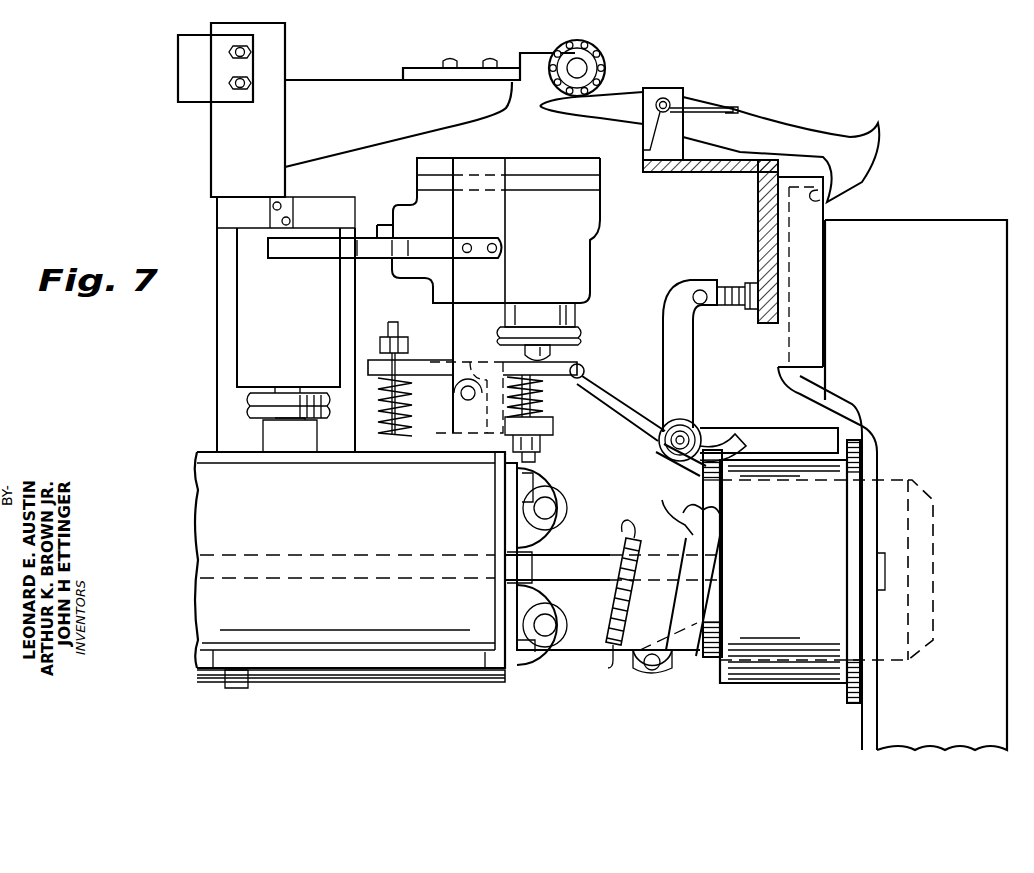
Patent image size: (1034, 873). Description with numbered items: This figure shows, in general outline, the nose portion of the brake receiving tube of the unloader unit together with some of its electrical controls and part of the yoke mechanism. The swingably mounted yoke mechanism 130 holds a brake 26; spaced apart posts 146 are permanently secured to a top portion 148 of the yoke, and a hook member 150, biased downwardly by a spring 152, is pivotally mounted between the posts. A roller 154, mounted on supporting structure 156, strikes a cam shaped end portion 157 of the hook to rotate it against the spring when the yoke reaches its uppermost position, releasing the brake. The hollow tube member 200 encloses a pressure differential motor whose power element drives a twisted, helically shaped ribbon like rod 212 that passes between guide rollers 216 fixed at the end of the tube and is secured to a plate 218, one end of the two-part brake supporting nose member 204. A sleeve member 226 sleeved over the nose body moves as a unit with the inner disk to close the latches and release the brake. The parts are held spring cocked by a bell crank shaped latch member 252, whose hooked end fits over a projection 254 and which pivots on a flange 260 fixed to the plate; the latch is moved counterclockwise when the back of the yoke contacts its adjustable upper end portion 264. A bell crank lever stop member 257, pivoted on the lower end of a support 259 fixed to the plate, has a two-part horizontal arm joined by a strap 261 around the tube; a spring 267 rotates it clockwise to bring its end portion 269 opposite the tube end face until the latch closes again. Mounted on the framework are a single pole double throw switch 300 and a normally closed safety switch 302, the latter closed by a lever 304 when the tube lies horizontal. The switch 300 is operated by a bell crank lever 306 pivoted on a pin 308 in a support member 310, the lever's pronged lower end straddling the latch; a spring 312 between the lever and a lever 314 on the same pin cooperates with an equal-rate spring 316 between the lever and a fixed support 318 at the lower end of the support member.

The brake 26 is at (934, 279).
The yoke mechanism 130 is at (759, 238).
The posts 146 is at (676, 90).
The top portion 148 is at (667, 174).
The hook member 150 is at (768, 128).
The spring 152 is at (712, 108).
The roller 154 is at (590, 54).
The supporting structure 156 is at (357, 88).
The cam shaped end portion 157 is at (572, 113).
The hollow tube member 200 is at (390, 684).
The brake supporting nose member 204 is at (917, 492).
The ribbon like rod 212 is at (590, 563).
The guide rollers 216 is at (572, 500).
The plate 218 is at (710, 662).
The sleeve member 226 is at (797, 685).
The latch member 252 is at (758, 432).
The projection 254 is at (822, 457).
The bell crank lever stop member 257 is at (532, 660).
The support 259 is at (690, 657).
The flange 260 is at (690, 490).
The strap 261 is at (248, 686).
The adjustable upper end portion 264 is at (720, 316).
The spring 267 is at (657, 523).
The end portion 269 is at (217, 650).
The single pole double throw switch 300 is at (553, 326).
The safety switch 302 is at (289, 400).
The lever 304 is at (283, 447).
The bell crank lever 306 is at (600, 381).
The pin 308 is at (468, 402).
The support member 310 is at (465, 332).
The spring 312 is at (385, 440).
The lever 314 is at (413, 447).
The spring 316 is at (547, 401).
The fixed support 318 is at (553, 437).